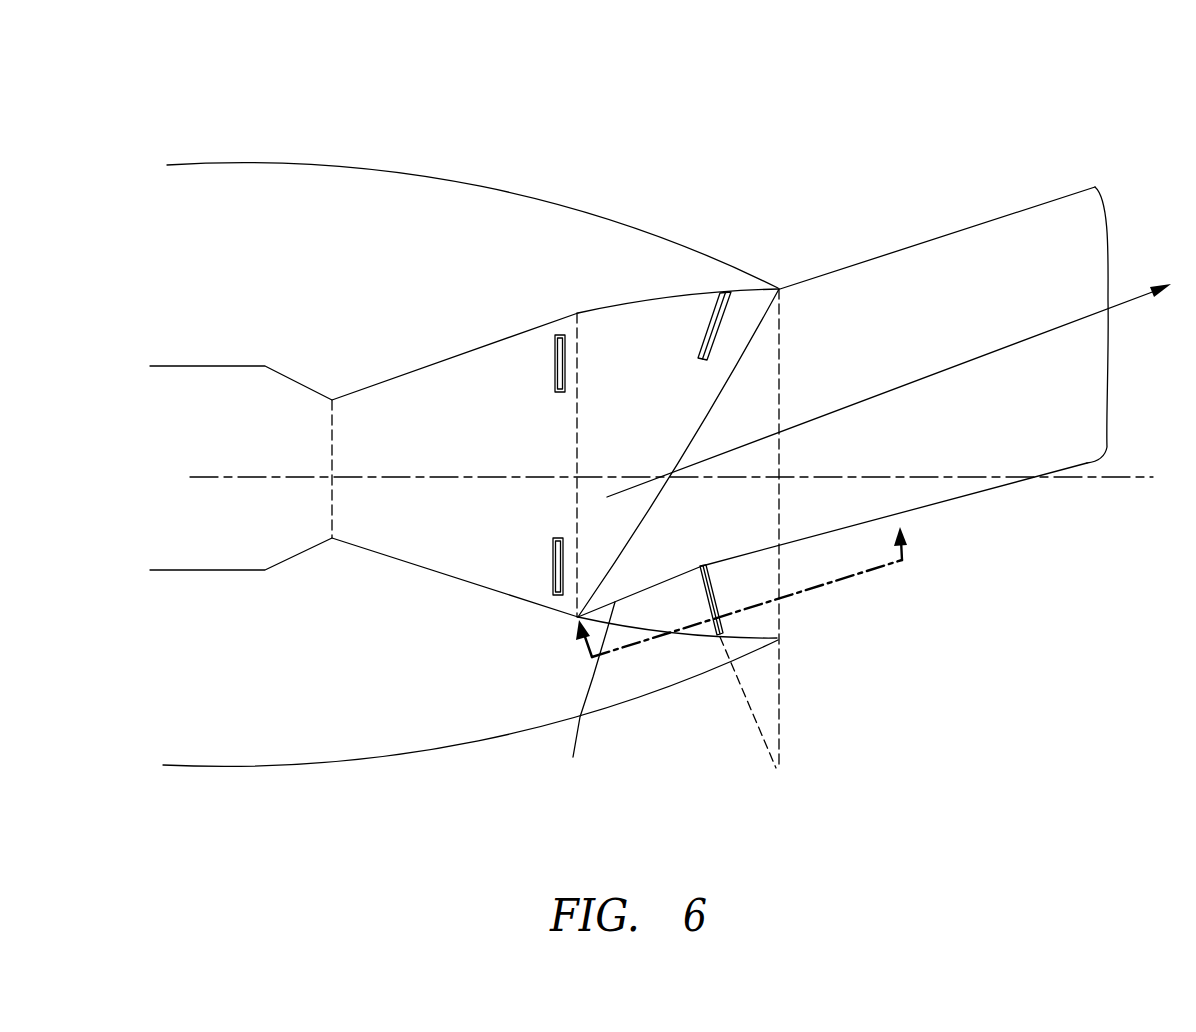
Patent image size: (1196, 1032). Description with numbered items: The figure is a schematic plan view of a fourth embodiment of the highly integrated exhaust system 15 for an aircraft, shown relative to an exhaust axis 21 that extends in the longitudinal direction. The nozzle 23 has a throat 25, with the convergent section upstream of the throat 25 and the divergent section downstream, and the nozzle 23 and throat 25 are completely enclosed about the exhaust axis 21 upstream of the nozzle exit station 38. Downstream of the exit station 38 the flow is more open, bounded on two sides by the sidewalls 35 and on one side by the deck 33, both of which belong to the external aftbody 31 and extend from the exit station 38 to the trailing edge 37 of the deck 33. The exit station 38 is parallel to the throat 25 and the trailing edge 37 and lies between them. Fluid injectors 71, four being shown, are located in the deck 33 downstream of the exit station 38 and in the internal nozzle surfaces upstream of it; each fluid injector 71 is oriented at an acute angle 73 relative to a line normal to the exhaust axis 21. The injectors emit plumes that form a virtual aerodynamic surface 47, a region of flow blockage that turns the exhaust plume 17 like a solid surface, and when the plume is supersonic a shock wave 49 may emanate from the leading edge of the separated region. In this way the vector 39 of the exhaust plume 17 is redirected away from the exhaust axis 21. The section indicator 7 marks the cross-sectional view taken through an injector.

The highly integrated exhaust system 15 is at (1050, 104).
The exhaust plume 17 is at (1113, 329).
The exhaust axis 21 is at (1140, 477).
The nozzle 23 is at (573, 313).
The throat 25 is at (332, 447).
The external aftbody 31 is at (630, 220).
The deck 33 is at (760, 455).
The sidewalls 35 is at (620, 308).
The trailing edge 37 is at (782, 390).
The nozzle exit station 38 is at (575, 468).
The vector 39 is at (1130, 297).
The virtual aerodynamic surface 47 is at (588, 699).
The shock wave 49 is at (688, 440).
The fluid injectors 71 is at (698, 342).
The acute angle 73 is at (717, 717).
The section line 7- 7 is at (744, 600).